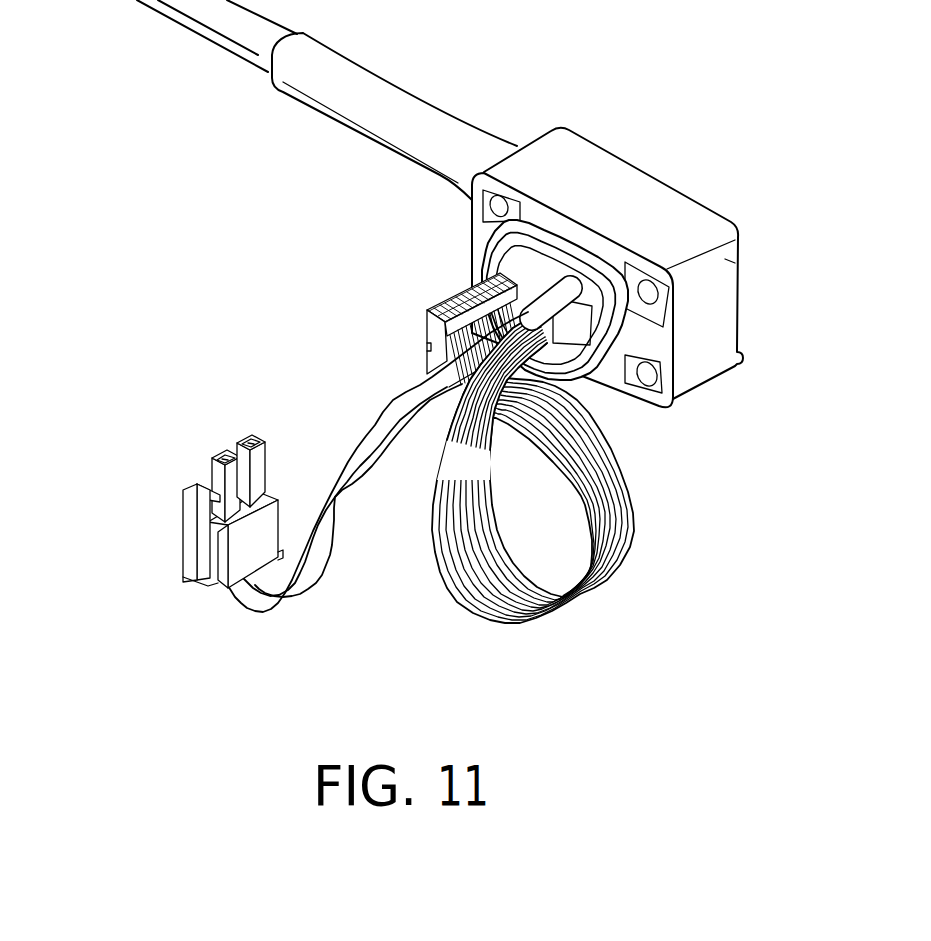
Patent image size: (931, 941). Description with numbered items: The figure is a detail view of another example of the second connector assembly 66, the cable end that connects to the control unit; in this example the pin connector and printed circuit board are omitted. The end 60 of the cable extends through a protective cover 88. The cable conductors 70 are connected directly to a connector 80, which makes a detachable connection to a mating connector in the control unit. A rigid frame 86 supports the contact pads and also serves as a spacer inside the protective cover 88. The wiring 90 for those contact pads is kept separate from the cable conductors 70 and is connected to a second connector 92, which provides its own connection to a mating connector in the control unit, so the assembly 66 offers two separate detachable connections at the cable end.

The second connector assembly 66 is at (611, 110).
The protective cover 88 is at (723, 317).
The end 60 is at (515, 285).
The rigid frame 86 is at (507, 262).
The connector 80 is at (419, 352).
The cable conductors 70 is at (625, 556).
The wiring 90 is at (375, 456).
The second connector 92 is at (190, 540).